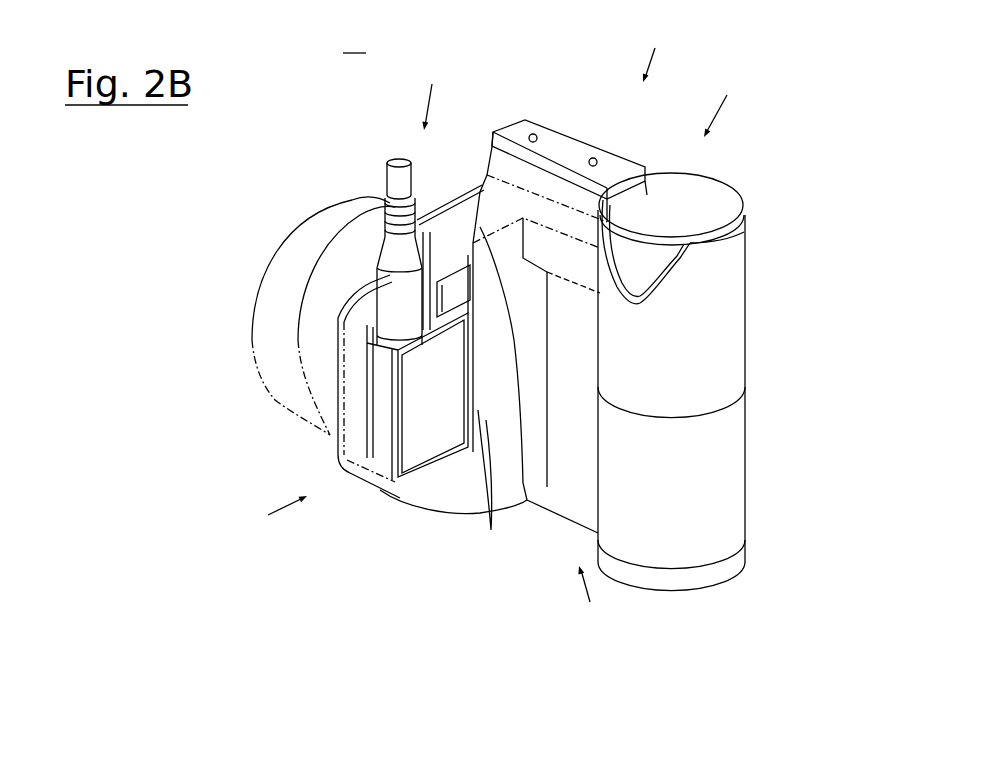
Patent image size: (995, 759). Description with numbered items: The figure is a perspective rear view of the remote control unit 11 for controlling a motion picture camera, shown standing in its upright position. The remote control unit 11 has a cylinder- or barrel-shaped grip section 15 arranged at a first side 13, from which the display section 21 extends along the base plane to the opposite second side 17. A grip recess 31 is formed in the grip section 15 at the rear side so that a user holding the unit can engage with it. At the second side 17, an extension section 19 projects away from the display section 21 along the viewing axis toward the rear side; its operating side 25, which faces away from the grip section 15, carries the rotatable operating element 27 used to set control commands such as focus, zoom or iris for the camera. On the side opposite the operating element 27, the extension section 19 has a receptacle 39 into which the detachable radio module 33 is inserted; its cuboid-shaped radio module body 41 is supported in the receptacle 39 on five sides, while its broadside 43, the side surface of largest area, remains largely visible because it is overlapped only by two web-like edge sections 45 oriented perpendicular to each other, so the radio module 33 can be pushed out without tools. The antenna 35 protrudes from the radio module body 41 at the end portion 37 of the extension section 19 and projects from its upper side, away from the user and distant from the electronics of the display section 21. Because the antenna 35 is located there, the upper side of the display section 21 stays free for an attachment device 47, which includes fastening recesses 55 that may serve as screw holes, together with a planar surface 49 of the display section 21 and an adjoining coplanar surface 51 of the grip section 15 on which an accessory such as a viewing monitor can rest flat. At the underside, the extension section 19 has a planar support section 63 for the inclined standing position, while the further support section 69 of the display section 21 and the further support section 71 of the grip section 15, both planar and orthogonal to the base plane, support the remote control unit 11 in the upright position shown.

The remote control unit 11 is at (255, 158).
The first side 13 is at (820, 308).
The grip section 15 is at (728, 268).
The second side 17 is at (226, 310).
The extension section 19 is at (469, 210).
The display section 21 is at (631, 171).
The operating side 25 is at (428, 190).
The operating element 27 is at (296, 263).
The grip recess 31 is at (640, 250).
The radio module 33 is at (406, 421).
The antenna 35 is at (387, 204).
The end portion 37 is at (352, 318).
The receptacle 39 is at (529, 503).
The radio module body 41 is at (443, 405).
The broadside 43 is at (432, 452).
The edge sections 45 is at (484, 497).
The attachment device 47 is at (500, 143).
The planar surface 49 is at (574, 152).
The surface 51 is at (726, 203).
The fastening recess 55 is at (536, 134).
The support section 63 is at (410, 505).
The further support section 69 is at (562, 520).
The further support section 71 is at (668, 592).